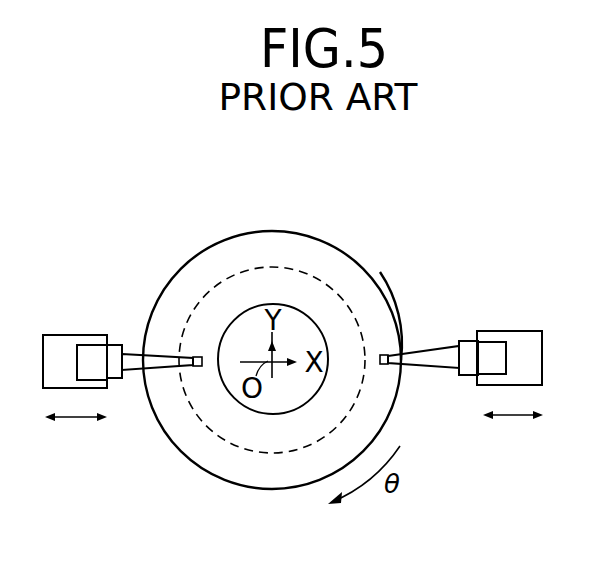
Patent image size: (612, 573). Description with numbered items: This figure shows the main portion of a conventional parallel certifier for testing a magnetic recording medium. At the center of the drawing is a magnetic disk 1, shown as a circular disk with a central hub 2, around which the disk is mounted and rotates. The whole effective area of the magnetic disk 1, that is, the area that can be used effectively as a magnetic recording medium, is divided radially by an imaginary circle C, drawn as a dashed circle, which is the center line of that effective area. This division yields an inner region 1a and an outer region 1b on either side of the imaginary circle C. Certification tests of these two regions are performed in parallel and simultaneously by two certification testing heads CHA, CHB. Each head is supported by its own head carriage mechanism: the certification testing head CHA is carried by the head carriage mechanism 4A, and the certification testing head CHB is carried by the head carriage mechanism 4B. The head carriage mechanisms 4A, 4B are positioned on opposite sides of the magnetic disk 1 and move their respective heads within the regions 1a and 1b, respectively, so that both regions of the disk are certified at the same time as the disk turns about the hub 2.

The magnetic disk 1 is at (277, 240).
The inner region 1a is at (354, 270).
The outer region 1b is at (224, 297).
The imaginary circle C is at (303, 272).
The hub / spindle 2 is at (278, 396).
The head carriage mechanism 4A is at (469, 352).
The head carriage mechanism 4B is at (120, 372).
The certification testing head CHA is at (383, 367).
The certification testing head CHB is at (195, 372).